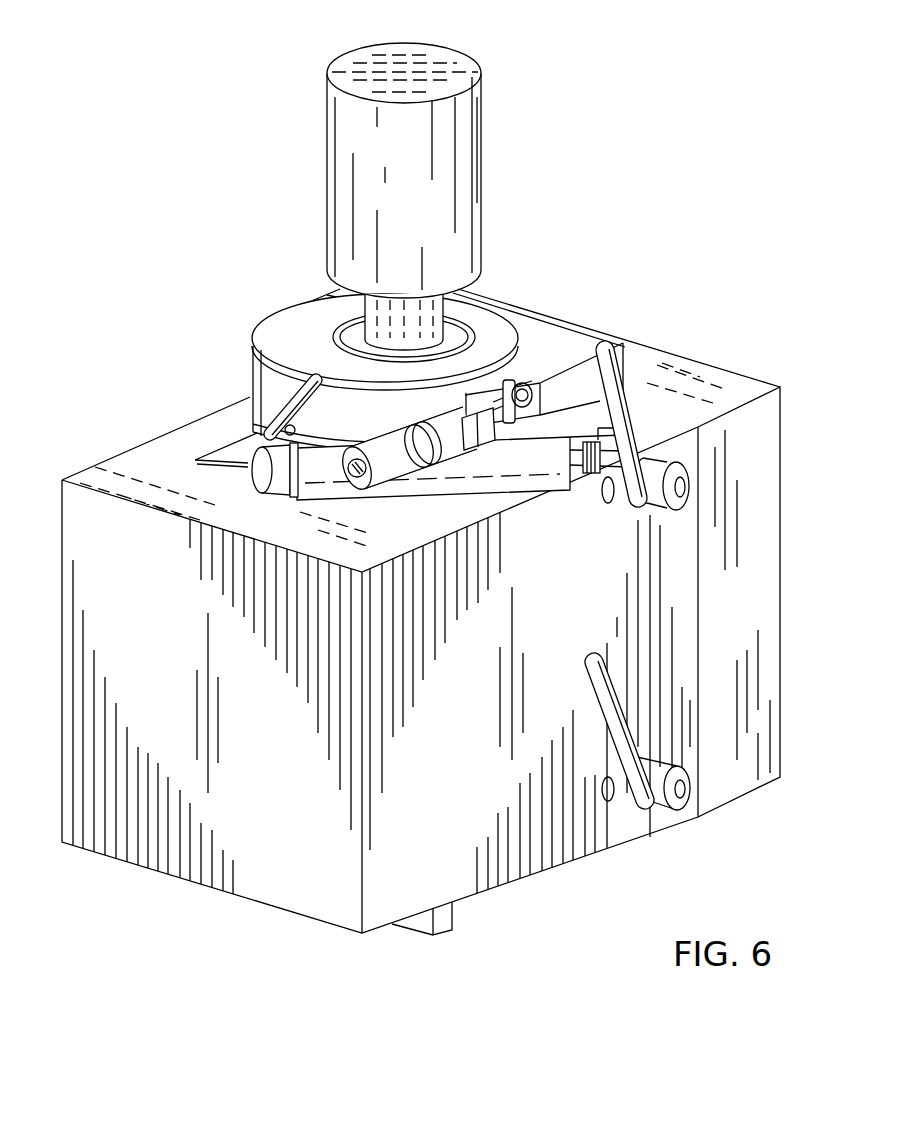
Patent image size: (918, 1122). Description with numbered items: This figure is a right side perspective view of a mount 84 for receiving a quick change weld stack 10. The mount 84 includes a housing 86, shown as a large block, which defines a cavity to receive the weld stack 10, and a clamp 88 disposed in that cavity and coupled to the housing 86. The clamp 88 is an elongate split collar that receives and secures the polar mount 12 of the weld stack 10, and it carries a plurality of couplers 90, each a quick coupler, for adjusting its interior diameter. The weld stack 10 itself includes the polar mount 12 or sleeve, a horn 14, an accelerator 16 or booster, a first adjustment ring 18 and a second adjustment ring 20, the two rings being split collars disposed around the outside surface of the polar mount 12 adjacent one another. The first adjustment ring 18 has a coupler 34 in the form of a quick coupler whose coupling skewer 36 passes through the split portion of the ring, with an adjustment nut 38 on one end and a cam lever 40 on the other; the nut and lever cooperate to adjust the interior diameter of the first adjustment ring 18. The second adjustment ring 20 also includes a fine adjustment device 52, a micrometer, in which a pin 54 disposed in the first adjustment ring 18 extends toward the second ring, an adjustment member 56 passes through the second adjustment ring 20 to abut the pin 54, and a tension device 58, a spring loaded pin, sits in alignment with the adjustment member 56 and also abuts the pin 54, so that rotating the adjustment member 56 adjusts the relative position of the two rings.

The quick change weld stack 10 is at (252, 121).
The polar mount 12 is at (312, 334).
The horn 14 is at (455, 914).
The accelerator 16 is at (482, 116).
The first adjustment ring 18 is at (503, 500).
The second adjustment ring 20 is at (565, 316).
The coupler 34 is at (237, 484).
The coupling skewer 36 is at (617, 478).
The adjustment nut 38 is at (590, 477).
The cam lever 40 is at (302, 374).
The fine adjustment device 52 is at (377, 483).
The pin 54 is at (506, 388).
The adjustment member 56 is at (404, 428).
The tension device 58 is at (528, 405).
The mount 84 is at (758, 372).
The housing 86 is at (148, 440).
The clamp 88 is at (237, 458).
The couplers 90 is at (665, 520).